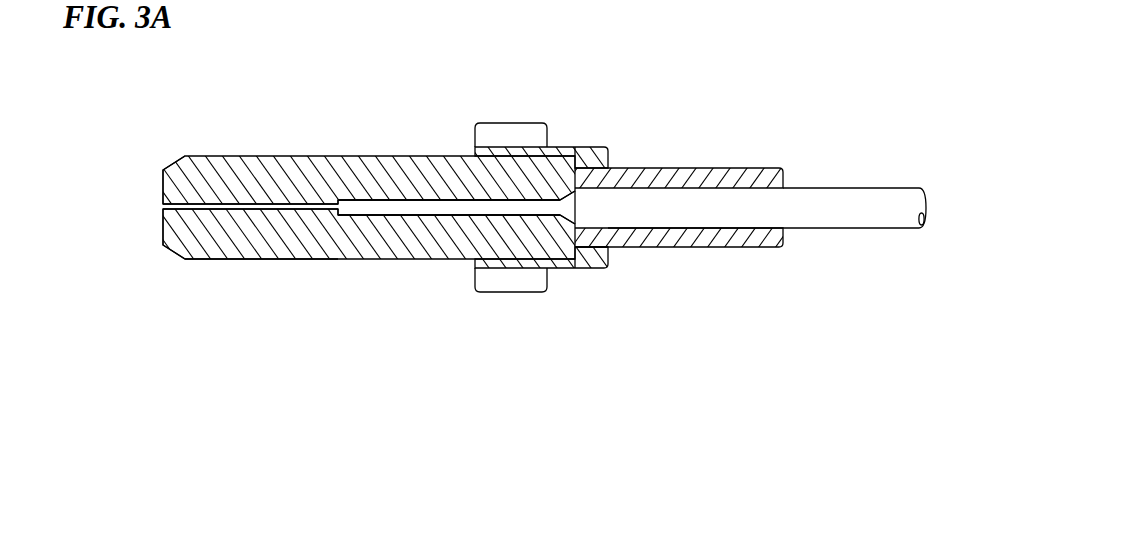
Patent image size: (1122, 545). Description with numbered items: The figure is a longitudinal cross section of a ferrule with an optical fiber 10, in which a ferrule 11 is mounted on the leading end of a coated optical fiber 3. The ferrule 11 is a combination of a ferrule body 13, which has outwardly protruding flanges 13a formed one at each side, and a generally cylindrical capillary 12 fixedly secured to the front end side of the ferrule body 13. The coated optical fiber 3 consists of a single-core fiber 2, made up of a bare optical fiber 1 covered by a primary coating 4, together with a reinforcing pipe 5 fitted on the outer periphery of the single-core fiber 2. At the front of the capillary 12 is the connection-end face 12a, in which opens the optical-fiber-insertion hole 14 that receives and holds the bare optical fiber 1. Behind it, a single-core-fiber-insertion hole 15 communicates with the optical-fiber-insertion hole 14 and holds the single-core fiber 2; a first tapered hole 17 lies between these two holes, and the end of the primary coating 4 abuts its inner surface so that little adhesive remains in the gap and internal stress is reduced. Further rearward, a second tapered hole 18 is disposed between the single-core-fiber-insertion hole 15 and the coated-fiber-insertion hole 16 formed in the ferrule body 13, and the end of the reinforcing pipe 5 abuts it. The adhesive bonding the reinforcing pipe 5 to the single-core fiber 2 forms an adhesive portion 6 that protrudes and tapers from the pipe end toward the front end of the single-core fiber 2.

The ferrule with an optical fiber 10 is at (732, 124).
The capillary 12 is at (273, 156).
The connection-end face 12a is at (163, 230).
The bare optical fiber 1 is at (213, 209).
The optical-fiber-insertion hole 14 is at (258, 207).
The first tapered hole 17 is at (338, 214).
The single-core fiber 2 is at (400, 209).
The single-core-fiber-insertion hole 15 is at (437, 214).
The primary coating 4 is at (410, 200).
The adhesive portion 6 is at (577, 192).
The second tapered hole 18 is at (577, 218).
The ferrule body 13 is at (703, 248).
The flange 13a is at (518, 132).
The reinforcing pipe 5 is at (657, 183).
The ferrule 11 is at (634, 258).
The coated-fiber-insertion hole 16 is at (720, 229).
The coated optical fiber 3 is at (861, 221).